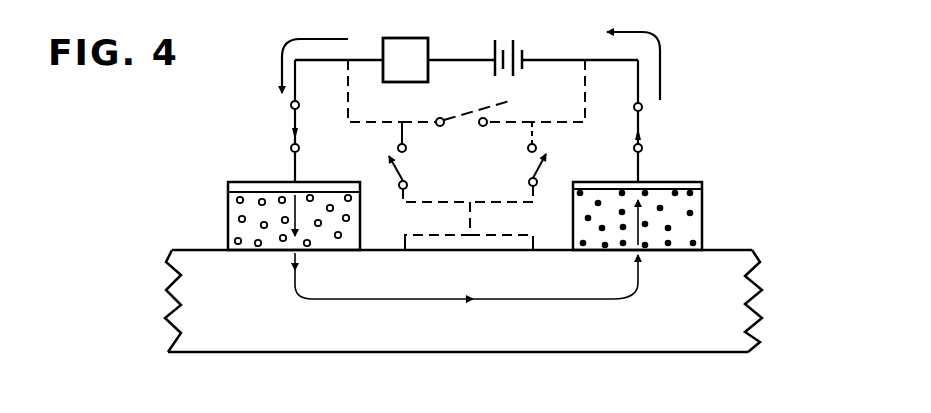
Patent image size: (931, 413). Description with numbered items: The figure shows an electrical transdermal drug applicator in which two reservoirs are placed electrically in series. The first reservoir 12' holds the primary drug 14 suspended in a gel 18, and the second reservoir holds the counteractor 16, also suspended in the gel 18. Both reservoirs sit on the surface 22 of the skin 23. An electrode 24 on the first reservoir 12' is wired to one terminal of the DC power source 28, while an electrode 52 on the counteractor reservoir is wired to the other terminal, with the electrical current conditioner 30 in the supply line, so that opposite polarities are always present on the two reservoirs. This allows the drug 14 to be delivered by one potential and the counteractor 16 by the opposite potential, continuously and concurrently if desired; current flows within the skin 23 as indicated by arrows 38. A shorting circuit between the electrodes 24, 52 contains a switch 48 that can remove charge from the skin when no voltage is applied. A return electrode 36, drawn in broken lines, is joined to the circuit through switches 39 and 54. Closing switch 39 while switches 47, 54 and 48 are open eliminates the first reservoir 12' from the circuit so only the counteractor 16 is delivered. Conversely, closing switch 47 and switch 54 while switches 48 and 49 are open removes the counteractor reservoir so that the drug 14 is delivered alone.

The first reservoir 12' is at (266, 202).
The primary drug 14 is at (309, 246).
The counteractor 16 is at (690, 213).
The gel 18 is at (233, 237).
The skin surface 22 is at (730, 250).
The skin 23 is at (733, 333).
The electrode 24 is at (258, 188).
The DC power source 28 is at (516, 43).
The electrical current conditioner 30 is at (395, 47).
The return electrode 36 is at (455, 248).
The current flow arrows 38 is at (510, 300).
The switch 39 is at (400, 172).
The switch 47 is at (292, 128).
The switch 48 is at (503, 108).
The switch 49 is at (642, 128).
The electrode 52 is at (672, 182).
The switch 54 is at (540, 172).